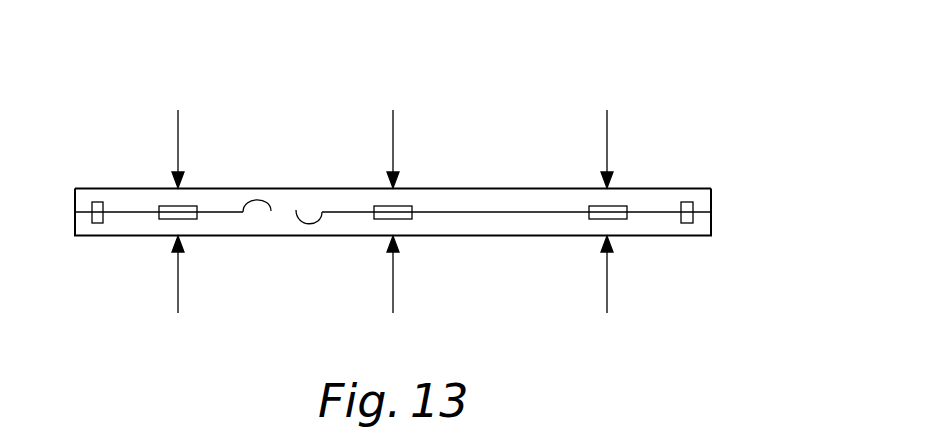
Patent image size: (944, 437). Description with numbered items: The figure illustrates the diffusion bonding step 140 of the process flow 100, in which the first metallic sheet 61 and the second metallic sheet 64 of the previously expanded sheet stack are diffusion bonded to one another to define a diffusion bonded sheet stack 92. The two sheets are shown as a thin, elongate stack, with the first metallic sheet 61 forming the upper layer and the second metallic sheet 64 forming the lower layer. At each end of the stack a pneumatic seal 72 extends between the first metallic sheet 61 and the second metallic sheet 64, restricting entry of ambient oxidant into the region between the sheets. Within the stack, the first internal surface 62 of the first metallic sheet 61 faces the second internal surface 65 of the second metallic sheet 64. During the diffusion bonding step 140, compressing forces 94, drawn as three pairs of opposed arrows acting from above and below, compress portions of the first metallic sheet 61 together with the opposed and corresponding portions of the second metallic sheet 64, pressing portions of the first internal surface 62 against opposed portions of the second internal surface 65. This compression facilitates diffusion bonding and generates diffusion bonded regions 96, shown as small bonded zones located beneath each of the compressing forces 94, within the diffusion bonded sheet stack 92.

The process flow 100 is at (762, 106).
The diffusion bonding step 140 is at (770, 181).
The first metallic sheet 61 is at (85, 176).
The second metallic sheet 64 is at (68, 245).
The diffusion bonded sheet stack 92 is at (660, 290).
The pneumatic seal 72 is at (78, 209).
The second internal surface 65 is at (244, 213).
The first internal surface 62 is at (322, 207).
The diffusion bonded region 96 is at (197, 206).
The compressing force 94 is at (177, 122).